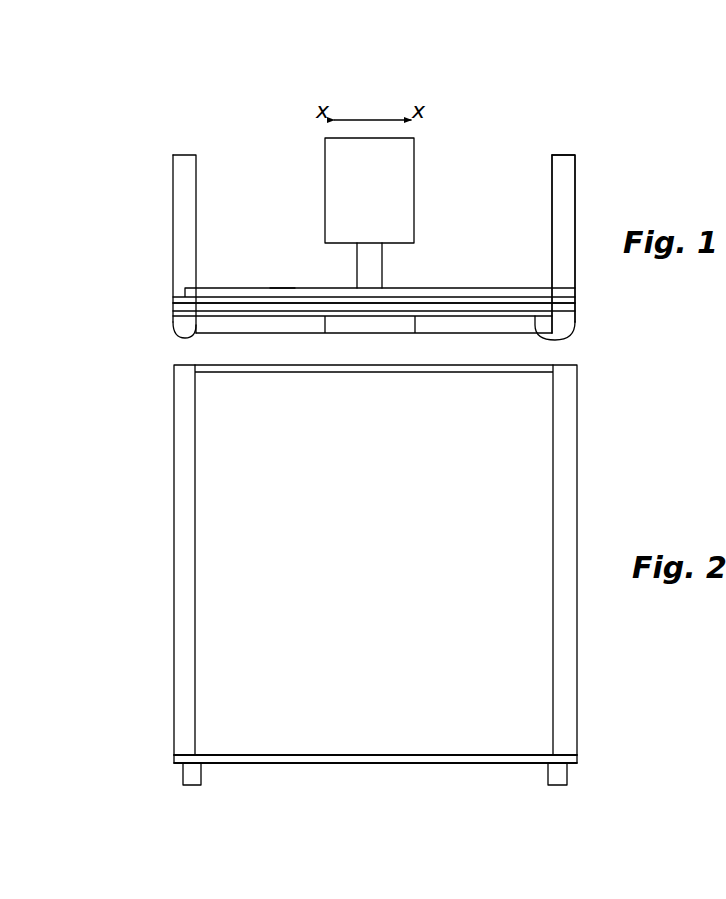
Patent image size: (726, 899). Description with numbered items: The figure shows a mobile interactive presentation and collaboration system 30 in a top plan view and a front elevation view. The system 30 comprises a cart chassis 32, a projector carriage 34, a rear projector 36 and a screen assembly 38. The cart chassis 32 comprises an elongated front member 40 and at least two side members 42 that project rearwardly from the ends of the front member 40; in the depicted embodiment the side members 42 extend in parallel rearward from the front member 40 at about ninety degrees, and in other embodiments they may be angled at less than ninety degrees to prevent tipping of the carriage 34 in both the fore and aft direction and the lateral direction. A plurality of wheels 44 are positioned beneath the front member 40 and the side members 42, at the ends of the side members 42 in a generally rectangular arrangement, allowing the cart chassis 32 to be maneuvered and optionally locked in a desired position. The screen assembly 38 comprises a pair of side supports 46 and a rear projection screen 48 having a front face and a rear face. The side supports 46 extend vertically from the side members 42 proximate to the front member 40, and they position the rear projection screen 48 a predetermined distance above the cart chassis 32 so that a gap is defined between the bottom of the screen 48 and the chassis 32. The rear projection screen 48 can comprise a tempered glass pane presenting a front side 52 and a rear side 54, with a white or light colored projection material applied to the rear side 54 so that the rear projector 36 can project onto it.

In FIG. 1, the mobile interactive presentation and collaboration system 30 is at (574, 92).
In FIG. 2, the mobile interactive presentation and collaboration system 30 is at (609, 417).
In FIG. 1, the cart chassis 32 is at (562, 172).
In FIG. 2, the cart chassis 32 is at (450, 760).
In FIG. 1, the projector carriage 34 is at (373, 273).
In FIG. 1, the rear projector 36 is at (403, 188).
In FIG. 1, the screen assembly 38 is at (578, 326).
In FIG. 2, the screen assembly 38 is at (563, 527).
In FIG. 1, the front member 40 is at (183, 318).
In FIG. 2, the front member 40 is at (313, 760).
In FIG. 1, the side members 42 is at (186, 205).
In FIG. 2, the wheels 44 is at (193, 775).
In FIG. 1, the side supports 46 is at (182, 302).
In FIG. 1, the rear projection screen 48 is at (447, 288).
In FIG. 2, the rear projection screen 48 is at (378, 541).
In FIG. 1, the front side 52 is at (282, 306).
In FIG. 2, the front side 52 is at (426, 636).
In FIG. 1, the rear side 54 is at (282, 284).